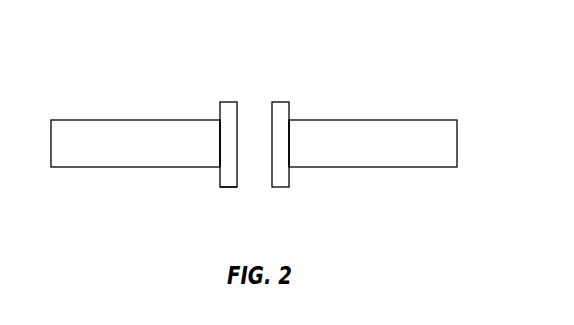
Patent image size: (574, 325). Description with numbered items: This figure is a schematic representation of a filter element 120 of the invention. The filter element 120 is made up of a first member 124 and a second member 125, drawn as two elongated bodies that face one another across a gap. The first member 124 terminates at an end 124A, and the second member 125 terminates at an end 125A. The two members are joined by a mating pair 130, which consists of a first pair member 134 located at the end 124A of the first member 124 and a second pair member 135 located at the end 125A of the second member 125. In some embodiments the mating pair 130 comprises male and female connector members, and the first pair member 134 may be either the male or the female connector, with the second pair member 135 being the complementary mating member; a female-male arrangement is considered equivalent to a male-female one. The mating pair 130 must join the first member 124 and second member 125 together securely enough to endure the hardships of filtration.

The filter element 120 is at (410, 57).
The first member 124 is at (86, 148).
The end of first member 124A is at (213, 112).
The second member 125 is at (433, 148).
The end of second member 125A is at (298, 170).
The mating pair 130 is at (208, 185).
The first pair member 134 is at (223, 188).
The second pair member 135 is at (282, 98).